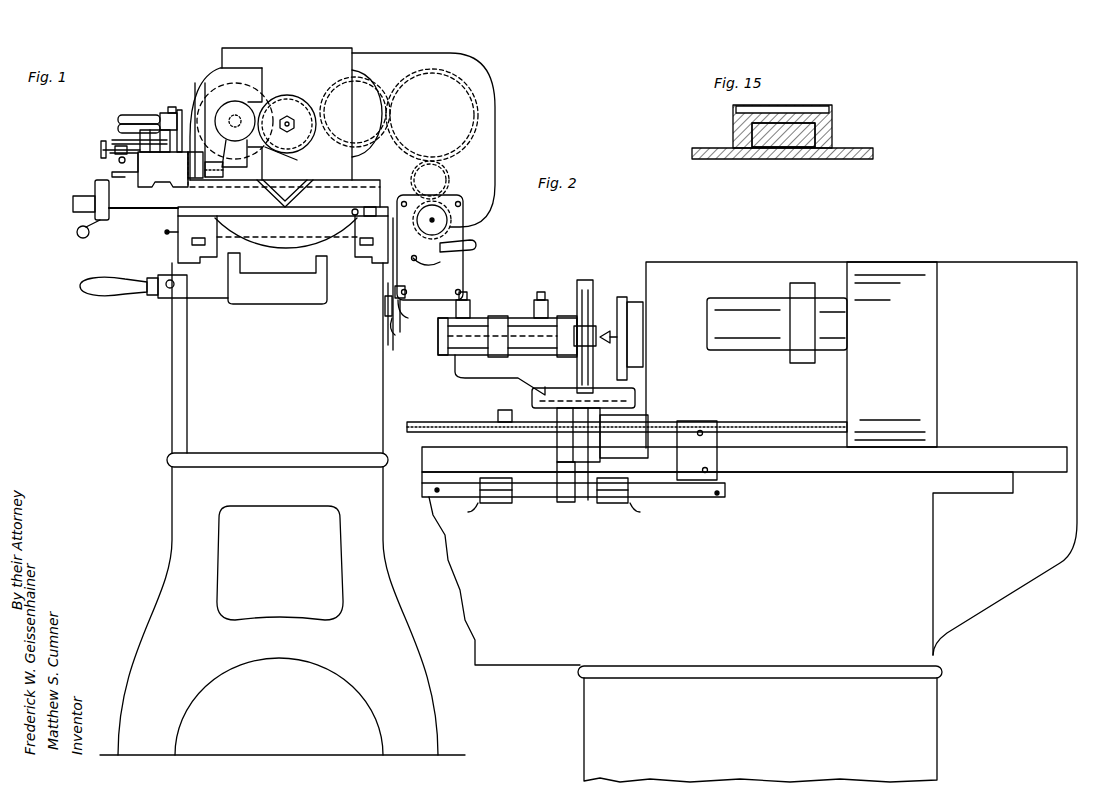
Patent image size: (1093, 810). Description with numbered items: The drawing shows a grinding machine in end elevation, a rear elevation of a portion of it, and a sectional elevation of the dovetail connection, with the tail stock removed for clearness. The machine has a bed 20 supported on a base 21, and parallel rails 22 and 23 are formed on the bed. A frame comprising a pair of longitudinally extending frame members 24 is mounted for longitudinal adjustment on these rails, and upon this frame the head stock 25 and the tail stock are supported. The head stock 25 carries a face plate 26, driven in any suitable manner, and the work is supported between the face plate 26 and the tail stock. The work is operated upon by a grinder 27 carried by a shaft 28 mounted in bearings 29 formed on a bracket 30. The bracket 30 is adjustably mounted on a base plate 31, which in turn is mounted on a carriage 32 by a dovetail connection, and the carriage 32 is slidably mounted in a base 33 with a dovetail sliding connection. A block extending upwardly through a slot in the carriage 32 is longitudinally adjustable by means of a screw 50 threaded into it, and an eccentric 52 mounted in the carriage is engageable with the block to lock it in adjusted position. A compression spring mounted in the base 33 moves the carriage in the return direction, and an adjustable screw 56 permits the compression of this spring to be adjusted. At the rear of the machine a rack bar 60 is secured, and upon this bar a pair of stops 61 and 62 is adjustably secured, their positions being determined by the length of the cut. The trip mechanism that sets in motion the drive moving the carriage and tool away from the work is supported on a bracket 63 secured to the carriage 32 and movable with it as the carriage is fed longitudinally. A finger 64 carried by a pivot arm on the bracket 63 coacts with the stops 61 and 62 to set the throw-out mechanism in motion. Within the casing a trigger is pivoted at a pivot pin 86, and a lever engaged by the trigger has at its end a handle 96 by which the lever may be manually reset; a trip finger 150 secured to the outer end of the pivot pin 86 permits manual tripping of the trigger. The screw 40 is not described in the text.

In FIG. 1, the bed 20 is at (205, 378).
In FIG. 2, the bed 20 is at (522, 662).
In FIG. 1, the base 21 is at (185, 513).
In FIG. 2, the base 21 is at (582, 712).
In FIG. 1, the rail 22 is at (192, 263).
In FIG. 1, the rail 23 is at (373, 268).
In FIG. 1, the frame member 24 is at (178, 246).
In FIG. 2, the frame member 24 is at (430, 460).
In FIG. 1, the head stock 25 is at (300, 56).
In FIG. 2, the head stock 25 is at (690, 272).
In FIG. 1, the face plate 26 is at (290, 95).
In FIG. 2, the face plate 26 is at (626, 300).
In FIG. 1, the grinder 27 is at (298, 160).
In FIG. 2, the grinder 27 is at (586, 288).
In FIG. 1, the shaft 28 is at (228, 100).
In FIG. 2, the shaft 28 is at (532, 328).
In FIG. 2, the bearing 29 is at (456, 355).
In FIG. 1, the bracket 30 is at (236, 160).
In FIG. 2, the bracket 30 is at (478, 378).
In FIG. 1, the base plate 31 is at (348, 192).
In FIG. 2, the base plate 31 is at (637, 401).
In FIG. 15, the base plate 31 is at (735, 120).
In FIG. 1, the carriage 32 is at (178, 212).
In FIG. 2, the carriage 32 is at (652, 422).
In FIG. 15, the carriage 32 is at (752, 135).
In FIG. 15, the base 33 is at (700, 151).
In FIG. 2, the feed screw 40 is at (766, 432).
In FIG. 1, the screw 50 is at (367, 208).
In FIG. 1, the eccentric 52 is at (352, 211).
In FIG. 1, the adjustable screw 56 is at (165, 233).
In FIG. 1, the rack bar 60 is at (381, 284).
In FIG. 2, the rack bar 60 is at (460, 497).
In FIG. 1, the stop 61 is at (394, 318).
In FIG. 2, the stop 61 is at (494, 503).
In FIG. 2, the stop 62 is at (617, 503).
In FIG. 1, the bracket 63 is at (403, 197).
In FIG. 1, the finger 64 is at (405, 295).
In FIG. 1, the trigger pivot pin 86 is at (409, 309).
In FIG. 1, the handle 96 is at (478, 243).
In FIG. 1, the trip finger 150 is at (442, 262).